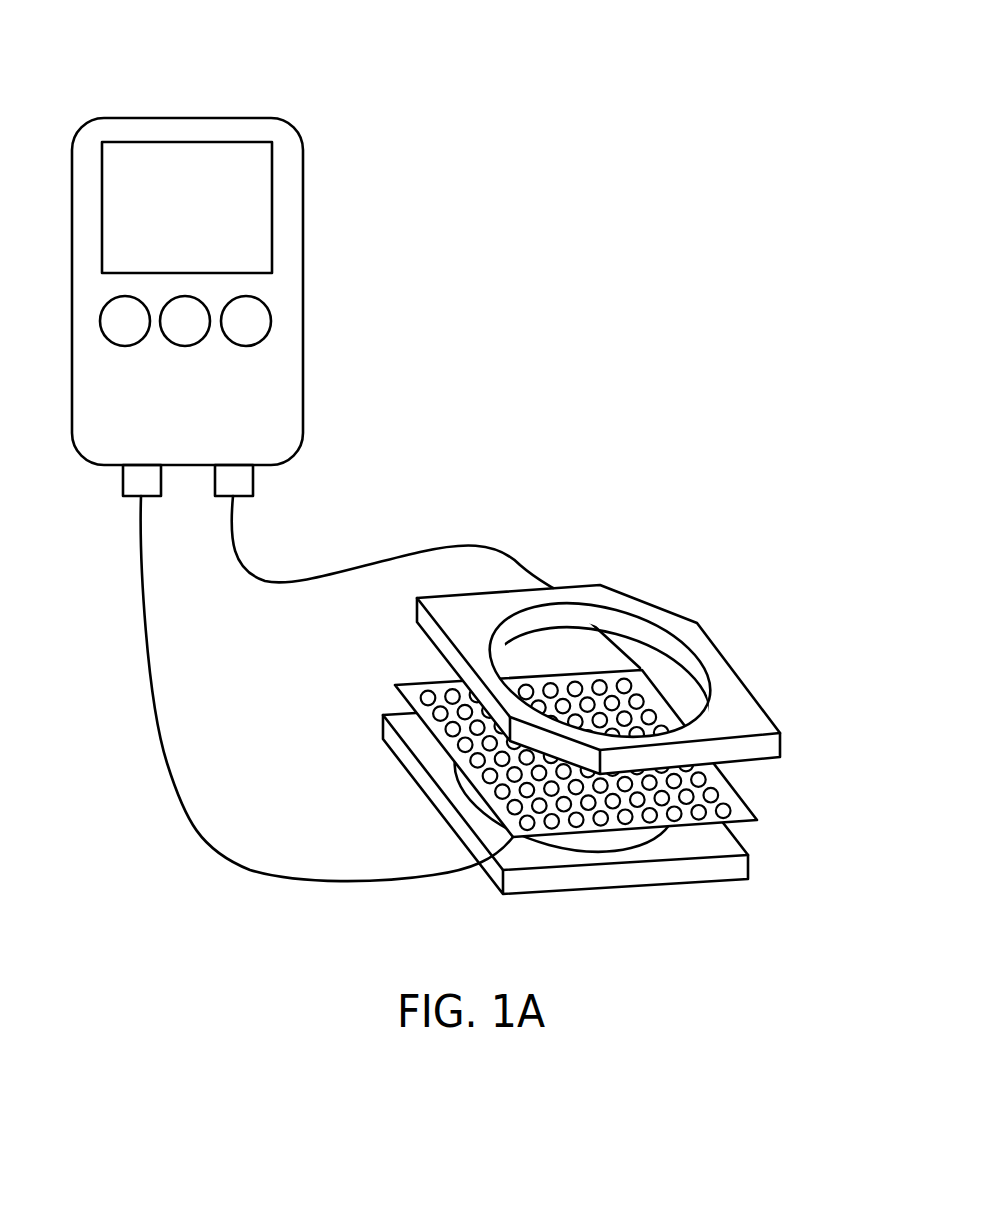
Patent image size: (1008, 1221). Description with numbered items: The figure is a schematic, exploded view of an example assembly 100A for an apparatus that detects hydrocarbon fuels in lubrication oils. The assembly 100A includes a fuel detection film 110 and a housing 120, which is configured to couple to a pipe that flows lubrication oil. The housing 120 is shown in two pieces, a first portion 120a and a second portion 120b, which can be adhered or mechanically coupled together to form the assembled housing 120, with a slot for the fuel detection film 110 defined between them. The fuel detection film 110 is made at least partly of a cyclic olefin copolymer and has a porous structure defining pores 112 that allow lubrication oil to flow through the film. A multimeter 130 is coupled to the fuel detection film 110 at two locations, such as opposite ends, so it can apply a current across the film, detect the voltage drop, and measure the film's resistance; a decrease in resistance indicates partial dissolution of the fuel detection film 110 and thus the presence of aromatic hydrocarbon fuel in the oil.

The assembly 100A is at (461, 454).
The multimeter 130 is at (303, 243).
The housing 120 is at (595, 689).
The first portion 120a is at (761, 704).
The fuel detection film 110 is at (581, 712).
The pores 112 is at (423, 690).
The second portion 120b is at (748, 868).